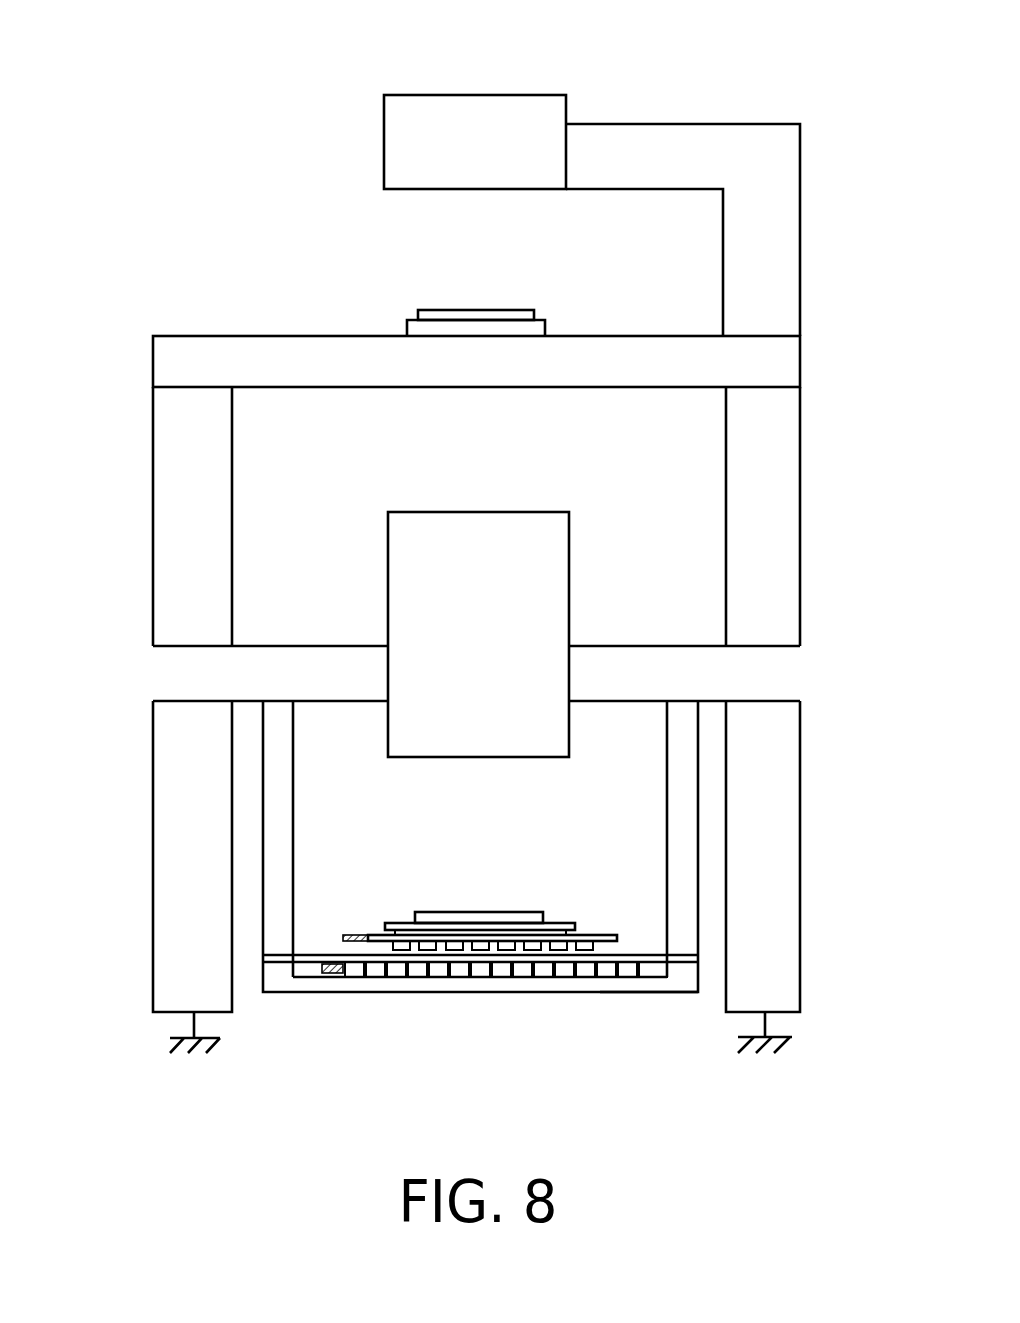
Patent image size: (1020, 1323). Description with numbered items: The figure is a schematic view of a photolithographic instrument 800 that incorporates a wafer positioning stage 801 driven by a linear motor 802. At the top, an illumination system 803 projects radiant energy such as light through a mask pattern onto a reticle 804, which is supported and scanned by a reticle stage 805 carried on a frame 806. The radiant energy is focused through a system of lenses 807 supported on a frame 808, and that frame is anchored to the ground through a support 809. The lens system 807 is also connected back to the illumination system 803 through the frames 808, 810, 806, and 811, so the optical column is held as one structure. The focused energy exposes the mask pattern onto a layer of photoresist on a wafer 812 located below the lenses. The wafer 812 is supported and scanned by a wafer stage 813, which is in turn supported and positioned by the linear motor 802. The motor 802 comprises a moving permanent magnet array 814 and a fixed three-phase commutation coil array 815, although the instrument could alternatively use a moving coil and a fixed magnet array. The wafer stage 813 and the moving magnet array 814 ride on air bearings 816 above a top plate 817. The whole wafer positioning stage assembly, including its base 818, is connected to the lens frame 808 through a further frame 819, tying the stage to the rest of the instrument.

The photolithographic instrument 800 is at (247, 224).
The wafer positioning stage 801 is at (487, 982).
The linear motor 802 is at (371, 924).
The illumination system 803 is at (475, 95).
The reticle 804 is at (477, 310).
The reticle stage 805 is at (405, 331).
The frame 806 is at (800, 355).
The system of lenses 807 is at (569, 588).
The frame 808 is at (800, 665).
The support 809 is at (800, 802).
The frame 810 is at (800, 497).
The frame 811 is at (800, 238).
The wafer 812 is at (481, 912).
The wafer stage 813 is at (580, 926).
The moving permanent magnet array 814 is at (580, 950).
The fixed three-phase commutation coil array 815 is at (320, 974).
The air bearings 816 is at (333, 978).
The top plate 817 is at (334, 938).
The base 818 is at (640, 993).
The frame 819 is at (667, 806).